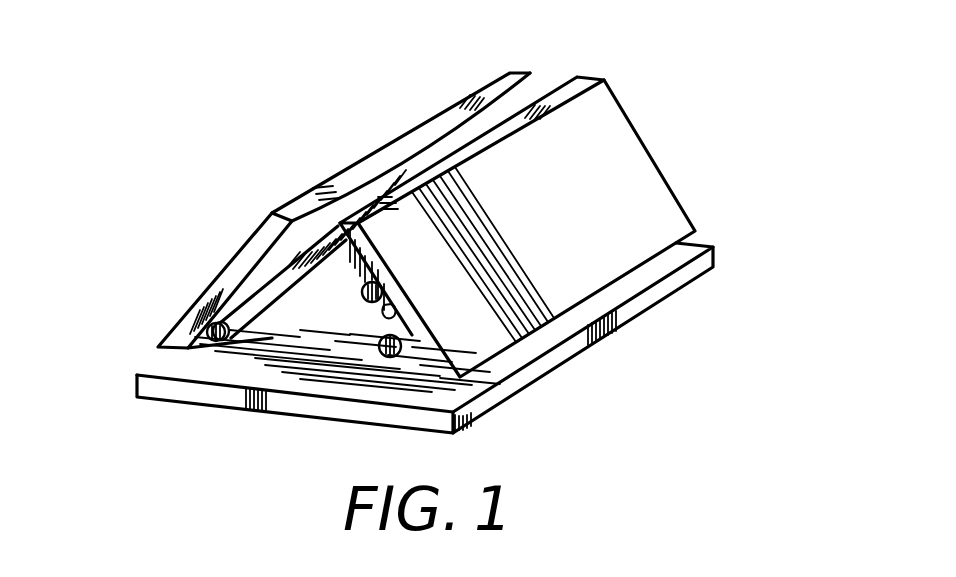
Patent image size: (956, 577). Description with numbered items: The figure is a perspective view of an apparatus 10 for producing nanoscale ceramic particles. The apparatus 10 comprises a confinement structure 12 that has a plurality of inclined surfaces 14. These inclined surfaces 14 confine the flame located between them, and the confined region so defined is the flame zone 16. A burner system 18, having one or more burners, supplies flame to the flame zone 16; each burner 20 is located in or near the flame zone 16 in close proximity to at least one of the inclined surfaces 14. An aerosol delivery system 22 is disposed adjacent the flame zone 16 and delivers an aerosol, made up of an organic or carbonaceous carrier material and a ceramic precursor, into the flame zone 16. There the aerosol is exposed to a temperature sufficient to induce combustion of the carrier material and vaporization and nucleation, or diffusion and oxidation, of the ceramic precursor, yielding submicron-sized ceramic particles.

The apparatus 10 is at (758, 103).
The confinement structure 12 is at (137, 283).
The inclined surfaces 14 is at (477, 120).
The flame zone 16 is at (275, 254).
The burner system 18 is at (370, 334).
The burner 20 is at (212, 340).
The aerosol delivery system 22 is at (381, 281).